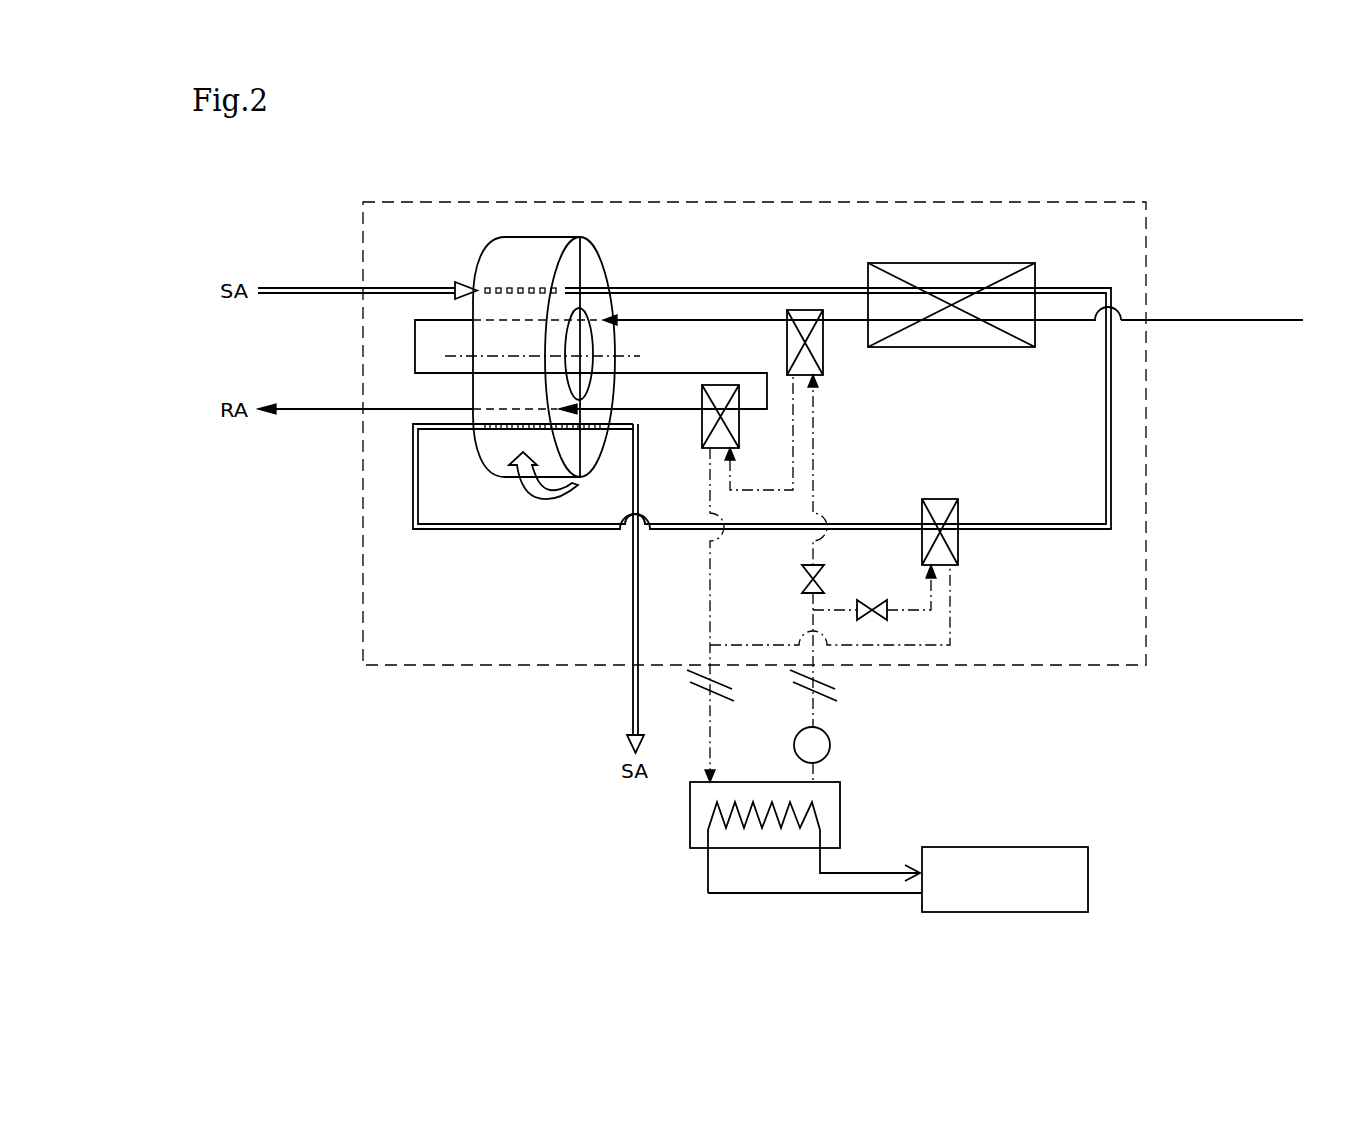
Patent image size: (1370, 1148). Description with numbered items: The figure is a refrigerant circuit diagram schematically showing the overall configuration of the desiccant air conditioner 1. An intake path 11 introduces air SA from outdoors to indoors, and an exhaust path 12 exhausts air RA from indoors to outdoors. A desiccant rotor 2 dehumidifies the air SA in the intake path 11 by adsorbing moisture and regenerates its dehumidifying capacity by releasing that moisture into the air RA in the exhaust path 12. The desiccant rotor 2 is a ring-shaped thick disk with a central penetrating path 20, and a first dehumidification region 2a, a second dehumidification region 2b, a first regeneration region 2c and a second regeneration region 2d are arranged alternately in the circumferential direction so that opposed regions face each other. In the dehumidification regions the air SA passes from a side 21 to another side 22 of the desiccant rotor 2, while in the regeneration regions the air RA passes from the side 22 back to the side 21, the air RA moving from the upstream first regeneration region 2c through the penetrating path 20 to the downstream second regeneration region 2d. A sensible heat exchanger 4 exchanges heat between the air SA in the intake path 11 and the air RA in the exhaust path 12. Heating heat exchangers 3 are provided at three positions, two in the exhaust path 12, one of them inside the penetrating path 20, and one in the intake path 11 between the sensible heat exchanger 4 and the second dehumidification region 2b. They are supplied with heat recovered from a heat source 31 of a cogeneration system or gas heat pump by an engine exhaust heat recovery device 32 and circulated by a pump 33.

The desiccant air conditioner 1 is at (378, 120).
The intake path 11 is at (402, 291).
The exhaust path 12 is at (1213, 320).
The desiccant rotor 2 is at (543, 237).
The side of the desiccant rotor 21 is at (478, 267).
The first dehumidification region 2a is at (568, 270).
The second dehumidification region 2b is at (591, 450).
The first regeneration region 2c is at (593, 270).
The second regeneration region 2d is at (563, 452).
The penetrating path 20 is at (590, 333).
The another side of the desiccant rotor 22 is at (608, 282).
The heating heat exchanger 3 is at (702, 430).
The sensible heat exchanger 4 is at (952, 263).
The heat source 31 is at (1005, 847).
The engine exhaust heat recovery device 32 is at (840, 812).
The pump 33 is at (832, 741).